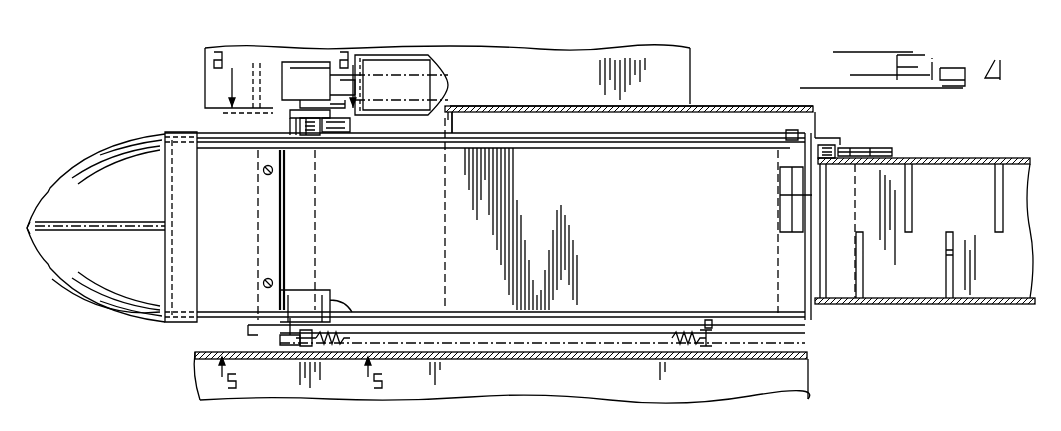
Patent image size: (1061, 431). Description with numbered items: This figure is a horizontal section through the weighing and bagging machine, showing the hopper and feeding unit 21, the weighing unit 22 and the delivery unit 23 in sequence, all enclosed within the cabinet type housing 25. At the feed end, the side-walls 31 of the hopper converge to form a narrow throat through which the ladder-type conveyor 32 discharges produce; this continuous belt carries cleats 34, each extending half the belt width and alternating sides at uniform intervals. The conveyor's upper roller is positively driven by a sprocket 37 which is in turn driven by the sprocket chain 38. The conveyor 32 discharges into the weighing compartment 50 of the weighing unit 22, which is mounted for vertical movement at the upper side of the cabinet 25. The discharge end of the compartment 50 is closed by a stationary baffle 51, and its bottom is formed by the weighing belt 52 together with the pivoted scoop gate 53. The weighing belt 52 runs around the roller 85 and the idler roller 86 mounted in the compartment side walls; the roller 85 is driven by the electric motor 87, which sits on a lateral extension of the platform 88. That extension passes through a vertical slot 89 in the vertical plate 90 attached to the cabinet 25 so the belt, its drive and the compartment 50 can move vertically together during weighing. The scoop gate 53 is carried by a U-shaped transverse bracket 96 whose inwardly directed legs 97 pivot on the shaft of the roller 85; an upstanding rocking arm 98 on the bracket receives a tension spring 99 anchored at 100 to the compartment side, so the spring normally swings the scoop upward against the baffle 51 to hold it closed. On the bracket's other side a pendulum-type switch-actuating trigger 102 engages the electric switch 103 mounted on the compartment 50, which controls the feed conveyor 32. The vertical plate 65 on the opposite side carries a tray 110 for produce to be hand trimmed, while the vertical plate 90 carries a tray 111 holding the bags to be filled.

The hopper and feeding unit 21 is at (929, 250).
The weighing unit 22 is at (710, 125).
The delivery unit 23 is at (95, 138).
The cabinet type housing 25 is at (27, 222).
The side-walls of the hopper 31 is at (940, 164).
The conveyor 32 is at (922, 290).
The cleats 34 is at (914, 208).
The sprocket 37 is at (824, 148).
The sprocket chain 38 is at (880, 157).
The weighing compartment 50 is at (530, 102).
The baffle 51 is at (167, 150).
The weighing belt 52 is at (632, 162).
The scoop gate 53 is at (100, 290).
The vertical plate 65 is at (560, 360).
The roller 85 is at (310, 300).
The idler roller 86 is at (785, 168).
The electric motor 87 is at (432, 65).
The platform 88 is at (447, 131).
The vertical slot 89 is at (456, 106).
The vertical plate 90 is at (582, 106).
The transverse bracket 96 is at (246, 334).
The legs 97 is at (284, 122).
The rocking arm 98 is at (306, 347).
The tension spring 99 is at (338, 345).
The spring anchor 100 is at (714, 336).
The switch-actuating trigger 102 is at (310, 133).
The electric switch 103 is at (338, 130).
The tray 110 is at (455, 378).
The bag tray 111 is at (565, 62).